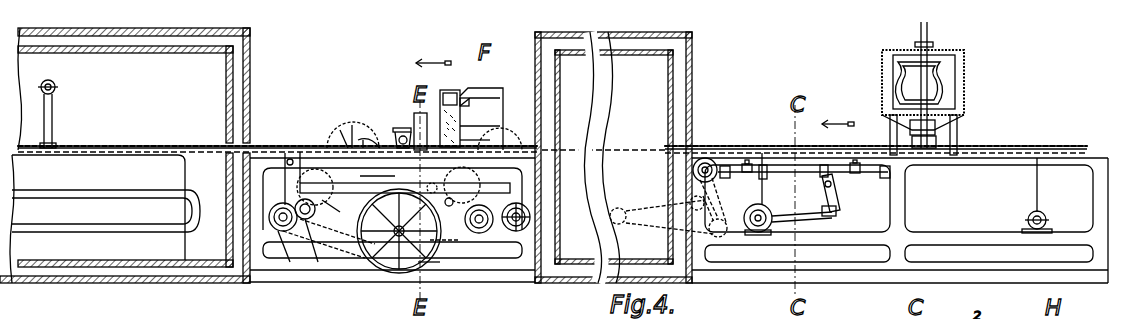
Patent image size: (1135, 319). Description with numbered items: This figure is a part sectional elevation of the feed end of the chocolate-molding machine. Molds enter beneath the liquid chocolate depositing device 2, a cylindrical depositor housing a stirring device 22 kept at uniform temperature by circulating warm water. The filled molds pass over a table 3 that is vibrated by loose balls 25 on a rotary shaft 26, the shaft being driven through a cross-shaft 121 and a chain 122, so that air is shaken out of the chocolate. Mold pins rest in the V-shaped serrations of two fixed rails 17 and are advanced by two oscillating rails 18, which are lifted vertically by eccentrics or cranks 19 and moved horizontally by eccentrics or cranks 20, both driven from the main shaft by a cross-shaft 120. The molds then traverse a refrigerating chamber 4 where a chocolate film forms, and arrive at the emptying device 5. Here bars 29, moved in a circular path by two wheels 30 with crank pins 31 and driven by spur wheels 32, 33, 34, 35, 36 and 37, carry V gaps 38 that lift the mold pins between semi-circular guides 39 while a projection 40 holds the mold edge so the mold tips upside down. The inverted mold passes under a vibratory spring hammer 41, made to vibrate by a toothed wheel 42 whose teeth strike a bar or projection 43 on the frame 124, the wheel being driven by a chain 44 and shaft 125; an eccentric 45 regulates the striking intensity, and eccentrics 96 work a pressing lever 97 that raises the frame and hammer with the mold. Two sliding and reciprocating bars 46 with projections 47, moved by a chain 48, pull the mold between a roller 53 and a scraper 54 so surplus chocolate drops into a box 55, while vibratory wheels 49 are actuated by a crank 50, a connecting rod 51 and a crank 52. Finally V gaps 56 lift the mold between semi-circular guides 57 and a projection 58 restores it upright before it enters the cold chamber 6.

The liquid chocolate depositing device 2 is at (950, 72).
The table 3 is at (780, 146).
The refrigerating chamber 4 is at (613, 157).
The emptying device 5 is at (332, 128).
The cold chamber 6 is at (125, 155).
The fixed rails 17 is at (884, 148).
The rails 18 is at (724, 146).
The eccentrics or cranks 19 is at (57, 84).
The eccentrics or cranks 20 is at (838, 214).
The stirring device 22 is at (940, 95).
The loose balls 25 is at (826, 180).
The rotary shaft 26 is at (738, 176).
The bars 29 is at (377, 188).
The wheels 30 is at (403, 178).
The crank pins 31 is at (377, 208).
The spur wheel 32 is at (516, 231).
The spur wheel 33 is at (482, 233).
The spur wheel 34 is at (289, 251).
The spur wheel 35 is at (316, 245).
The spur wheel 36 is at (434, 194).
The spur wheel 37 is at (341, 205).
The V gaps 38 is at (510, 138).
The semi-circular guides 39 is at (490, 130).
The projection 40 is at (506, 130).
The vibratory spring hammer 41 is at (437, 145).
The toothed wheel 42 is at (432, 118).
The bar or projection 43 is at (440, 74).
The chain 44 is at (565, 160).
The eccentric 45 is at (475, 132).
The sliding and reciprocating bars 46 is at (390, 145).
The projections 47 is at (412, 148).
The chain 48 is at (330, 166).
The vibratory wheels 49 is at (447, 247).
The crank 50 is at (435, 263).
The connecting rod 51 is at (329, 268).
The crank 52 is at (288, 232).
The roller 53 is at (395, 138).
The scraper 54 is at (399, 231).
The box 55 is at (368, 140).
The V gaps 56 is at (340, 140).
The semi-circular guides 57 is at (352, 125).
The projection 58 is at (370, 135).
The eccentrics 96 is at (539, 205).
The pressing lever 97 is at (495, 90).
The cross-shaft 120 is at (760, 232).
The cross-shaft 121 is at (620, 210).
The chain 122 is at (640, 218).
The frame 124 is at (416, 72).
The shaft 125 is at (480, 115).